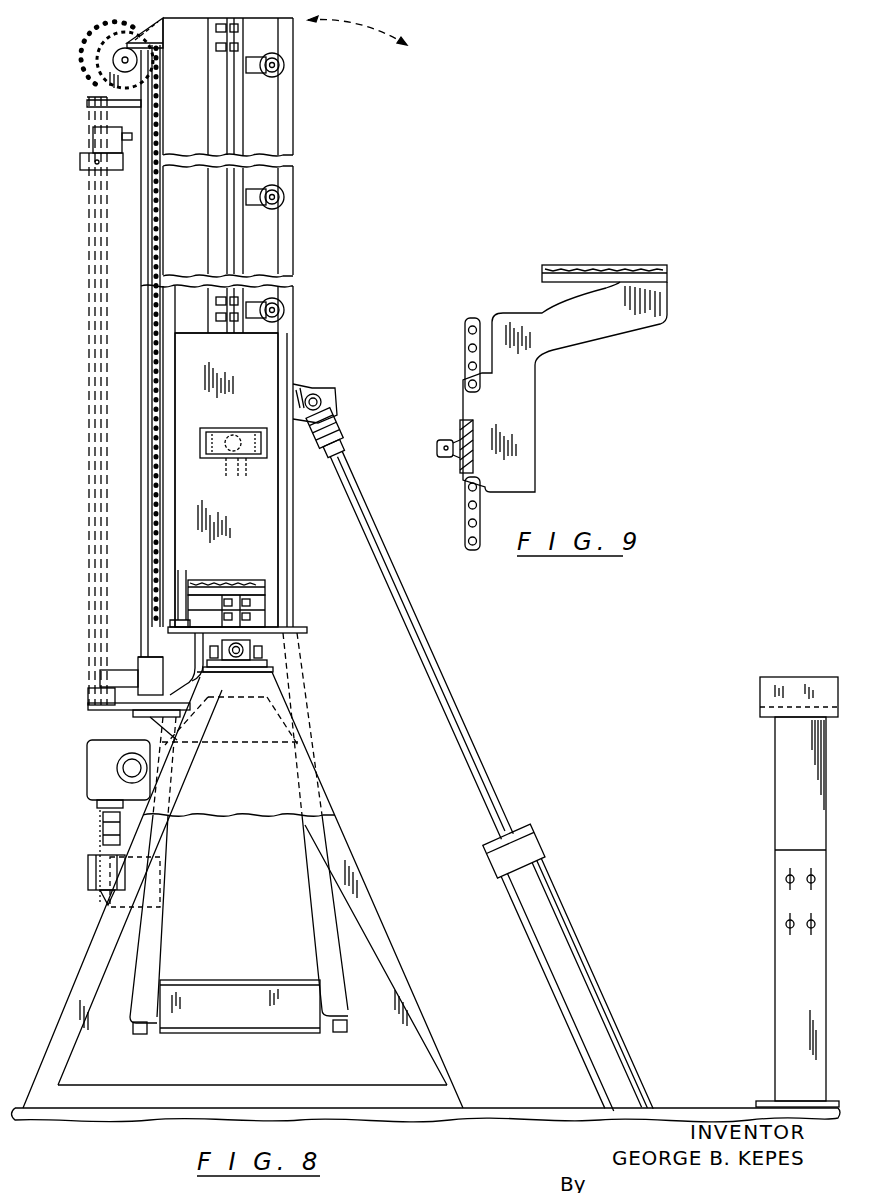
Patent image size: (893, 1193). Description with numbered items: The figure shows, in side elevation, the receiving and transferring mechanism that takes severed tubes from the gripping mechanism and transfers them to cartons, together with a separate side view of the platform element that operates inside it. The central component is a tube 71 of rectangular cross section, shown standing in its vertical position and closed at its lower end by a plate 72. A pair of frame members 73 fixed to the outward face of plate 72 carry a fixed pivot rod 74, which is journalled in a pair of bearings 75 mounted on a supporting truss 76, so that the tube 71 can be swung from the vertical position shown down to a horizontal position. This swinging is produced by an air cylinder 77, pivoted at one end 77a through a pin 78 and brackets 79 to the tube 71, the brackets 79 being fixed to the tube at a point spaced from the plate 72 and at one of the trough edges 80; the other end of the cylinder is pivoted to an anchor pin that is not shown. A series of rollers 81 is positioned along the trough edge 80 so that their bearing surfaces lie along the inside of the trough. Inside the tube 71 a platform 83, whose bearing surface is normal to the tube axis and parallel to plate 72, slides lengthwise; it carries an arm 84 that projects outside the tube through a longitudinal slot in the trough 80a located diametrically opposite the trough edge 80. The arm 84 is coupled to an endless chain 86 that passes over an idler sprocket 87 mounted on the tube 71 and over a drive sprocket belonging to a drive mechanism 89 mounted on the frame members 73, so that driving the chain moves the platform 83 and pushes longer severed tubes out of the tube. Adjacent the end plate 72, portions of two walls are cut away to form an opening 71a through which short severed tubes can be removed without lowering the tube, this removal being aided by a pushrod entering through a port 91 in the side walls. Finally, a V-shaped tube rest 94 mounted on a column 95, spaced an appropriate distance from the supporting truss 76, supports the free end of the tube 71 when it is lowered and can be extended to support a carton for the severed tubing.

In FIG. 8, the tube 71 is at (296, 229).
In FIG. 8, the opening 71a is at (258, 421).
In FIG. 8, the plate 72 is at (304, 628).
In FIG. 8, the frame members 73 is at (300, 900).
In FIG. 8, the pivot rod 74 is at (237, 662).
In FIG. 8, the bearings 75 is at (266, 656).
In FIG. 8, the supporting truss 76 is at (390, 938).
In FIG. 8, the air cylinder 77 is at (579, 938).
In FIG. 8, the end of air cylinder 77a is at (340, 426).
In FIG. 8, the pin 78 is at (330, 402).
In FIG. 8, the brackets 79 is at (301, 386).
In FIG. 8, the trough edge 80 is at (295, 320).
In FIG. 8, the trough 80a is at (178, 376).
In FIG. 8, the rollers 81 is at (283, 68).
In FIG. 8, the platform 83 is at (239, 580).
In FIG. 9, the platform 83 is at (600, 262).
In FIG. 9, the arm 84 is at (538, 412).
In FIG. 8, the endless chain 86 is at (161, 512).
In FIG. 9, the endless chain 86 is at (478, 323).
In FIG. 8, the idler sprocket 87 is at (100, 68).
In FIG. 8, the drive mechanism 89 is at (96, 778).
In FIG. 8, the port 91 is at (258, 460).
In FIG. 8, the V-shaped tube rest 94 is at (760, 703).
In FIG. 8, the column 95 is at (780, 800).